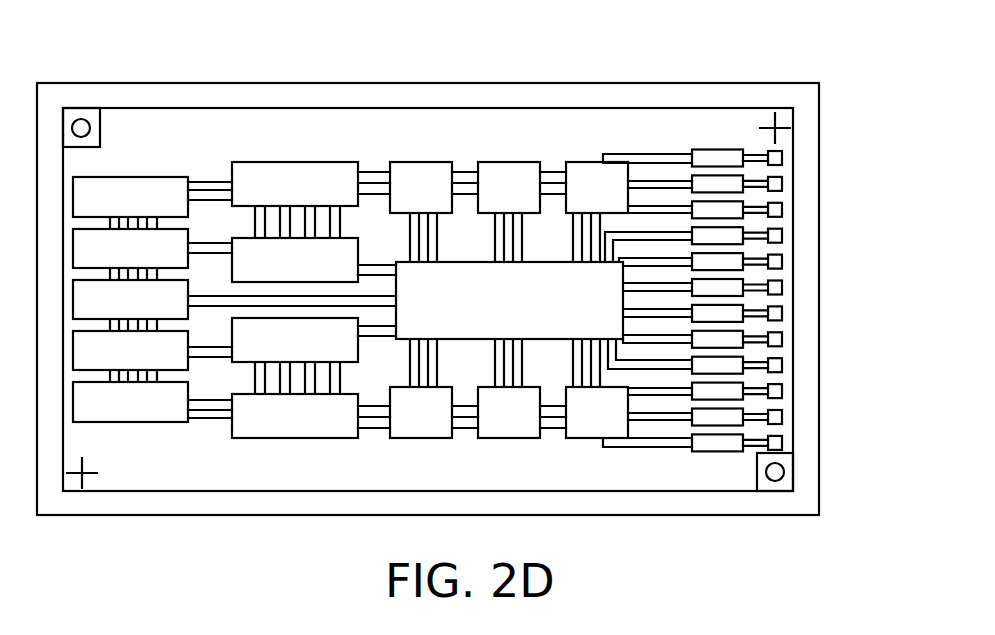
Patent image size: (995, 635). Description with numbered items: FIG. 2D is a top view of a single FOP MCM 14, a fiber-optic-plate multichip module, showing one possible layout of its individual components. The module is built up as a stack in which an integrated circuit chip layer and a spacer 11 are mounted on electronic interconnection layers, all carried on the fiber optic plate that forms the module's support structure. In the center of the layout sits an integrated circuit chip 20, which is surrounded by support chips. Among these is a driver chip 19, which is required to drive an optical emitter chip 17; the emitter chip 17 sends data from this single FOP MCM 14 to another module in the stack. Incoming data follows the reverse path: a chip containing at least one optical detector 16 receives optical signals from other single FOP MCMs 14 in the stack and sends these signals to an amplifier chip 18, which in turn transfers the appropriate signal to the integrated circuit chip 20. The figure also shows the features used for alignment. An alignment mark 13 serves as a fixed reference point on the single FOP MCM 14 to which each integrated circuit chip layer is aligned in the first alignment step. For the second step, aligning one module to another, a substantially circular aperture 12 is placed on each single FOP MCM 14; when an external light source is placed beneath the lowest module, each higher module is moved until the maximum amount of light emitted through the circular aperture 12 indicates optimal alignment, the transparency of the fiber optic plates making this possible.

The spacer 11 is at (805, 101).
The circular aperture 12 is at (81, 128).
The alignment mark 13 is at (86, 476).
The single FOP MCM 14 is at (643, 68).
The optical detector 16 is at (783, 159).
The optical emitter chip 17 is at (783, 184).
The amplifier chip 18 is at (735, 364).
The driver chip 19 is at (735, 392).
The integrated circuit chip 20 is at (528, 315).